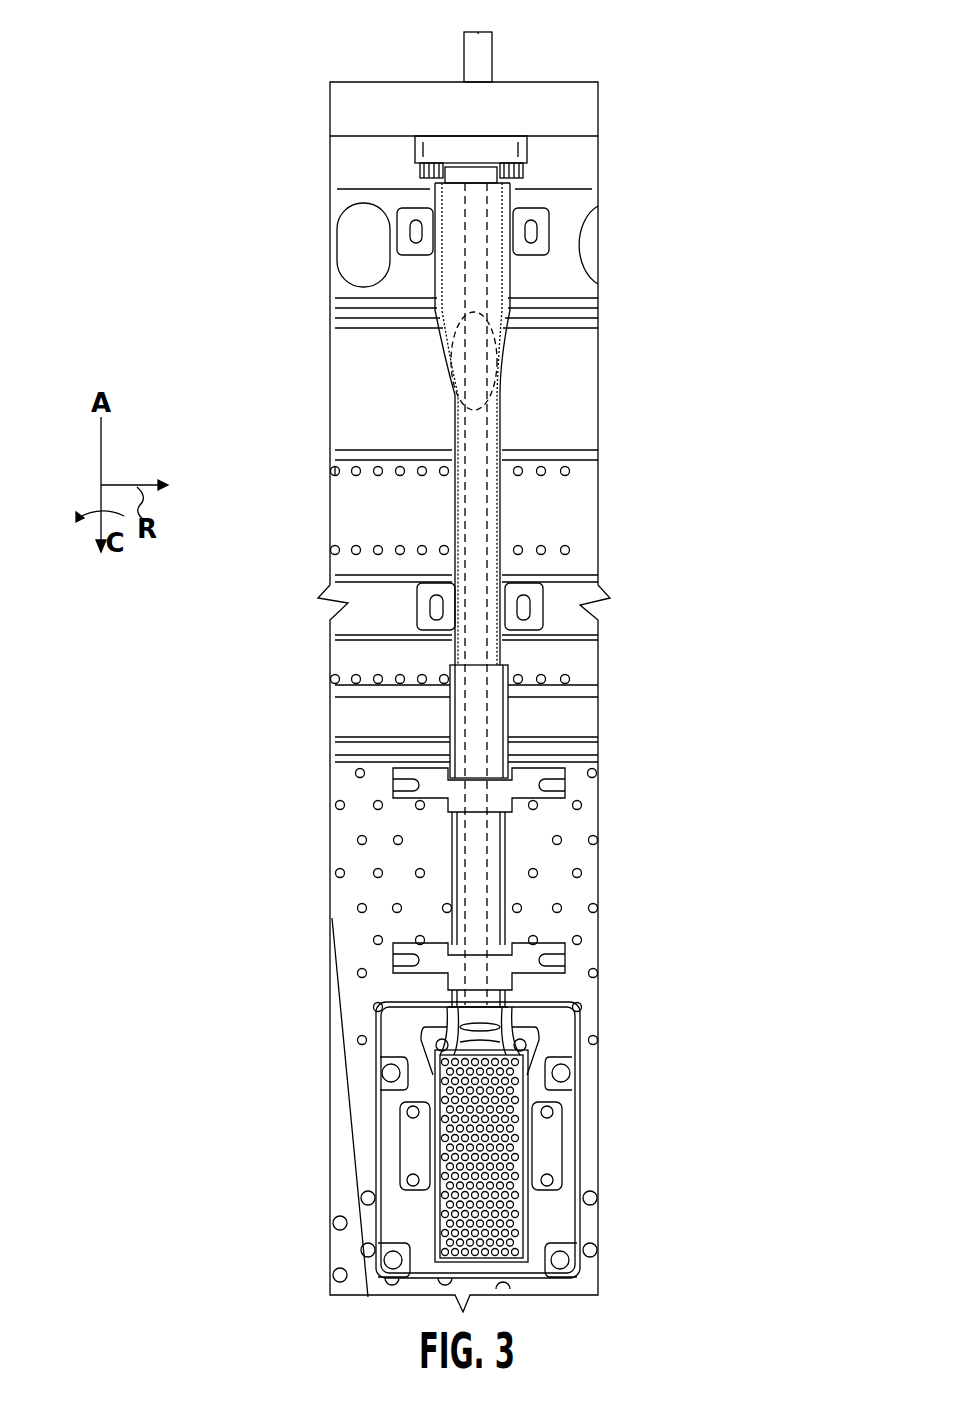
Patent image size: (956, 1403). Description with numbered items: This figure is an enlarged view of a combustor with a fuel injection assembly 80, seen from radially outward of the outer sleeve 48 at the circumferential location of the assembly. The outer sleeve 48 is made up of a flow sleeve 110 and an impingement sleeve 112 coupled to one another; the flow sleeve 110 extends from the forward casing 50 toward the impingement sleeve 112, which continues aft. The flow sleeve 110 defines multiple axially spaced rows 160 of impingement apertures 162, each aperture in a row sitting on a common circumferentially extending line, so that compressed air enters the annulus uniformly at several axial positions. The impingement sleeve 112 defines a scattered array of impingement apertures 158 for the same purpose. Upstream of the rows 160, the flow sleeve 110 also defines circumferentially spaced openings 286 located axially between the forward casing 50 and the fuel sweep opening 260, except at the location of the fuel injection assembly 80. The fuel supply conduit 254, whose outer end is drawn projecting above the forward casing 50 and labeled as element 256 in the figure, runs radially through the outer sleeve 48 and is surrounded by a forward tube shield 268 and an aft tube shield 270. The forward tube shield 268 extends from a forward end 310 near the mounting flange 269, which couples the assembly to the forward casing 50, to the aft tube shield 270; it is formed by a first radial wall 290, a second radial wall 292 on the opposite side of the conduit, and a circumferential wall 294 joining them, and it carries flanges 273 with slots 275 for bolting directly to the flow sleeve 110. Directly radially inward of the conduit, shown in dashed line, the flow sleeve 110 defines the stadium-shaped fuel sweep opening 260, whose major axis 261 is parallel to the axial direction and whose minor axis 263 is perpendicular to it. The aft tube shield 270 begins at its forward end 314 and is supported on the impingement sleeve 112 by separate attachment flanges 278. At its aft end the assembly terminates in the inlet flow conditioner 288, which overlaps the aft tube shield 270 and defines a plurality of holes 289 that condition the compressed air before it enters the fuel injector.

The outer sleeve 48 is at (570, 388).
The forward casing 50 is at (362, 102).
The fuel injection assembly 80 is at (535, 724).
The flow sleeve 110 is at (345, 380).
The impingement sleeve 112 is at (350, 890).
The impingement apertures 158 is at (565, 840).
The rows of impingement apertures 160 is at (333, 679).
The impingement apertures 162 is at (378, 466).
The fuel supply conduit 254 is at (493, 62).
The shaft end 256 is at (479, 32).
The fuel sweep opening 260 is at (502, 365).
The major axis 261 is at (478, 385).
The minor axis 263 is at (470, 352).
The forward tube shield 268 is at (490, 512).
The mounting flange 269 is at (520, 153).
The aft tube shield 270 is at (487, 873).
The flanges 273 is at (410, 227).
The slots 275 is at (545, 220).
The attachment flanges 278 is at (530, 958).
The openings 286 is at (340, 281).
The inlet flow conditioner 288 is at (515, 1130).
The holes 289 is at (500, 1228).
The first radial wall 290 is at (440, 308).
The second radial wall 292 is at (503, 535).
The circumferential wall 294 is at (500, 290).
The forward end 310 is at (430, 178).
The forward end 314 is at (510, 670).